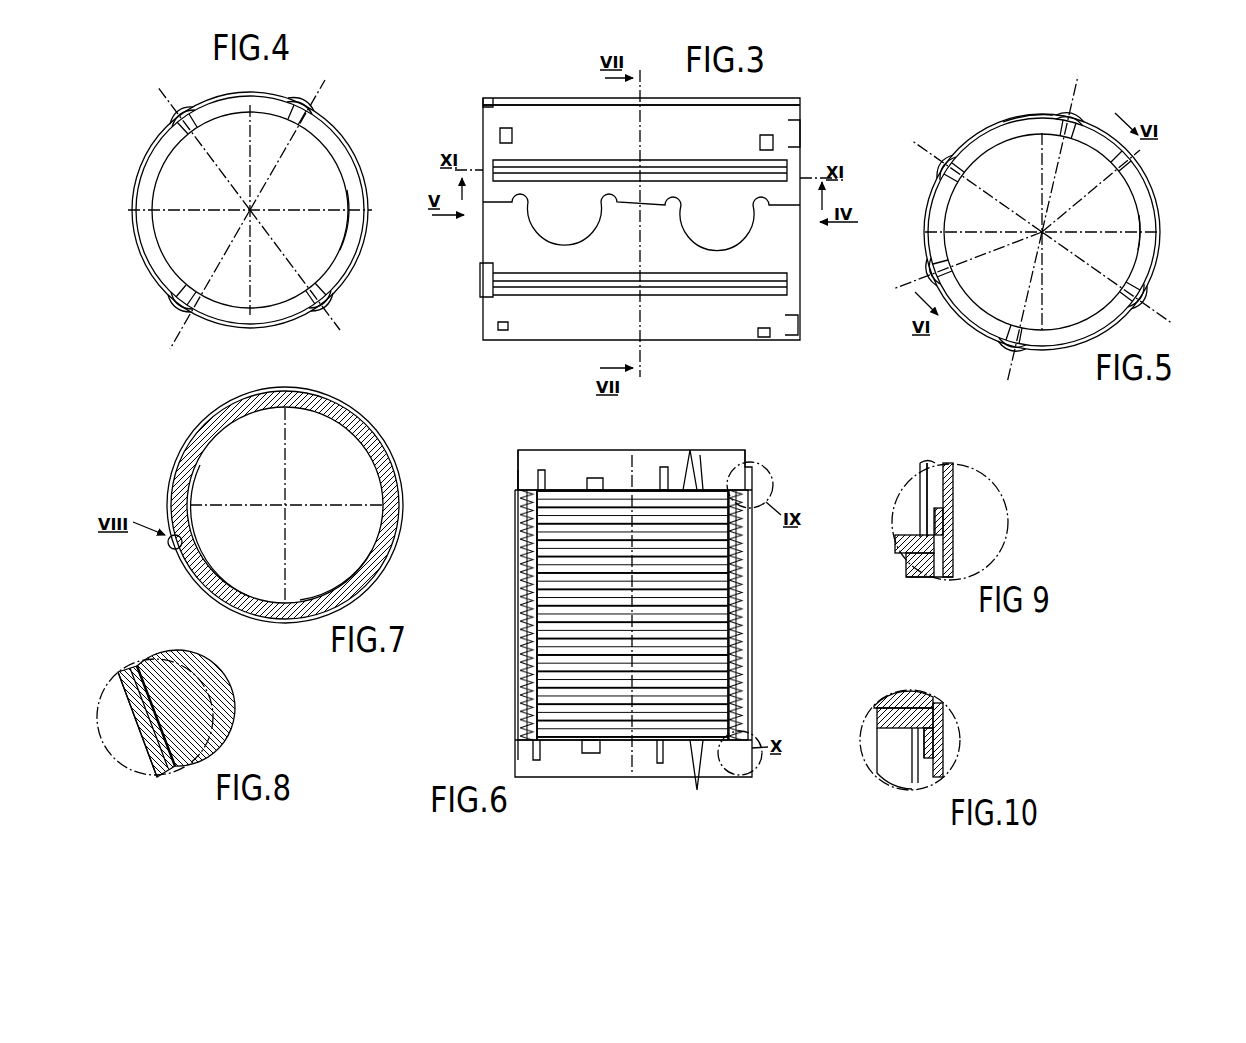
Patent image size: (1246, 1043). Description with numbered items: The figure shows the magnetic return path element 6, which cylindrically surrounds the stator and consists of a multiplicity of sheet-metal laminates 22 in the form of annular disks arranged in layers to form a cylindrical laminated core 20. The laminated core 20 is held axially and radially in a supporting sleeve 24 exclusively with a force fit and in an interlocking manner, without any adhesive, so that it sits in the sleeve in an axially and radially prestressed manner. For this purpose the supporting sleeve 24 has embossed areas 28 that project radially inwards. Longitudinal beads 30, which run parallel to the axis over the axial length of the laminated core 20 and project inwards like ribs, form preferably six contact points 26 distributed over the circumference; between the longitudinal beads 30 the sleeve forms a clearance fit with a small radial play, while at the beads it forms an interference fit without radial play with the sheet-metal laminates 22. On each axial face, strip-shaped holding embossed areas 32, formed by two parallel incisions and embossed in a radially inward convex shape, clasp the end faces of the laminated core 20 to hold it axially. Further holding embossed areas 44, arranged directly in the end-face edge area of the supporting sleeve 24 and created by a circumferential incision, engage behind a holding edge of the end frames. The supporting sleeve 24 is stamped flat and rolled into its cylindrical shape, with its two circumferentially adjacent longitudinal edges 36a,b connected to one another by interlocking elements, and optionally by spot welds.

In FIG. 3, the magnetic return path element 6 is at (790, 100).
In FIG. 4, the laminated core 20 is at (330, 261).
In FIG. 5, the laminated core 20 is at (1158, 200).
In FIG. 7, the laminated core 20 is at (222, 573).
In FIG. 6, the laminated core 20 is at (570, 486).
In FIG. 9, the laminated core 20 is at (935, 578).
In FIG. 10, the laminated core 20 is at (876, 729).
In FIG. 4, the sheet-metal laminates 22 is at (342, 170).
In FIG. 5, the sheet-metal laminates 22 is at (1136, 217).
In FIG. 7, the sheet-metal laminates 22 is at (330, 587).
In FIG. 8, the sheet-metal laminates 22 is at (190, 702).
In FIG. 6, the sheet-metal laminates 22 is at (697, 762).
In FIG. 9, the sheet-metal laminates 22 is at (920, 567).
In FIG. 10, the sheet-metal laminates 22 is at (882, 703).
In FIG. 4, the supporting sleeve 24 is at (365, 248).
In FIG. 3, the supporting sleeve 24 is at (563, 337).
In FIG. 5, the supporting sleeve 24 is at (965, 140).
In FIG. 7, the supporting sleeve 24 is at (363, 425).
In FIG. 8, the supporting sleeve 24 is at (158, 777).
In FIG. 6, the supporting sleeve 24 is at (633, 613).
In FIG. 9, the supporting sleeve 24 is at (953, 490).
In FIG. 10, the supporting sleeve 24 is at (945, 712).
In FIG. 7, the contact points 26 is at (257, 603).
In FIG. 8, the contact points 26 is at (153, 713).
In FIG. 3, the embossed areas 28 is at (542, 160).
In FIG. 5, the embossed areas 28 is at (1053, 115).
In FIG. 8, the embossed areas 28 is at (135, 743).
In FIG. 6, the embossed areas 28 is at (600, 486).
In FIG. 9, the embossed areas 28 is at (935, 510).
In FIG. 10, the embossed areas 28 is at (944, 737).
In FIG. 3, the longitudinal beads 30 is at (676, 287).
In FIG. 8, the longitudinal beads 30 is at (137, 730).
In FIG. 6, the longitudinal beads 30 is at (662, 765).
In FIG. 9, the longitudinal beads 30 is at (920, 485).
In FIG. 10, the longitudinal beads 30 is at (910, 781).
In FIG. 4, the holding embossed areas 32 is at (335, 298).
In FIG. 5, the holding embossed areas 32 is at (1082, 340).
In FIG. 6, the holding embossed areas 32 is at (593, 756).
In FIG. 9, the holding embossed areas 32 is at (945, 520).
In FIG. 10, the holding embossed areas 32 is at (940, 748).
In FIG. 3, the longitudinal edges 36a,b is at (647, 208).
In FIG. 4, the holding embossed areas 44 is at (325, 307).
In FIG. 5, the holding embossed areas 44 is at (1016, 350).